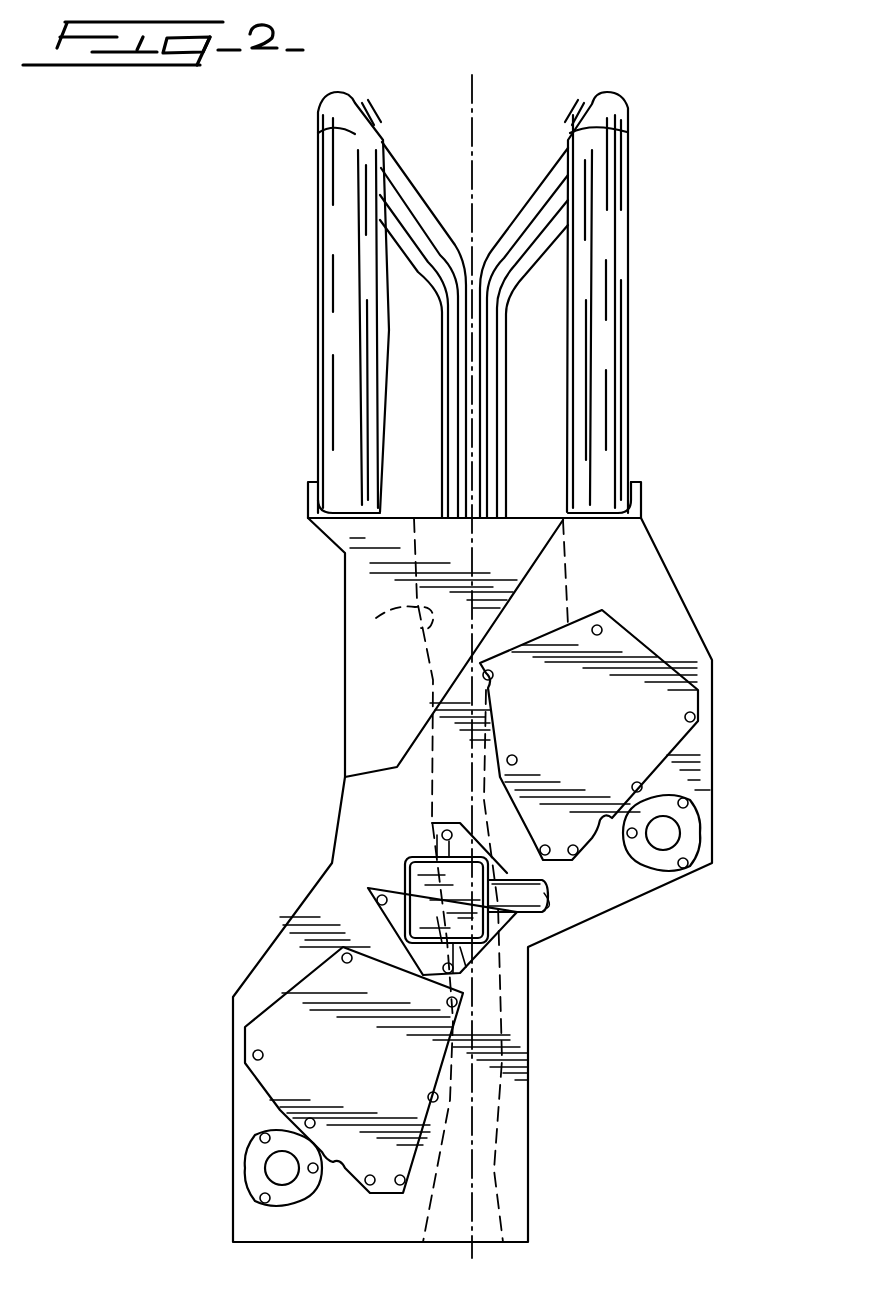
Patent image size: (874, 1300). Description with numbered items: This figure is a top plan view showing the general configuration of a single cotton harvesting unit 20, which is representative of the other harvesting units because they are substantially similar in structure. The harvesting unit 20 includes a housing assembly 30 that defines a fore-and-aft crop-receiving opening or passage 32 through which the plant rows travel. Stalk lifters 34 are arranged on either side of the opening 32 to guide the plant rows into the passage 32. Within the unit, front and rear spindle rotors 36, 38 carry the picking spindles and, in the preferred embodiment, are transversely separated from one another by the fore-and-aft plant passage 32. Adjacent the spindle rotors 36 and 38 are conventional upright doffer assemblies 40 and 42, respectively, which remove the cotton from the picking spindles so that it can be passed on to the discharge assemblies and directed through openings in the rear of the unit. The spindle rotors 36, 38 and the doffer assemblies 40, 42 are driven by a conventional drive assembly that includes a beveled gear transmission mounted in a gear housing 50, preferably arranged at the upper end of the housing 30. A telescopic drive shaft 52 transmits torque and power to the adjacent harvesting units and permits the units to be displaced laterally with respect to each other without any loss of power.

The harvesting unit 20 is at (338, 757).
The housing assembly 30 is at (372, 823).
The crop-receiving opening or passage 32 is at (394, 626).
The stalk lifters 34 is at (583, 132).
The front spindle rotor 36 is at (592, 731).
The rear spindle rotor 38 is at (362, 1070).
The doffer assembly 40 is at (688, 842).
The doffer assembly 42 is at (262, 1170).
The gear housing 50 is at (433, 893).
The telescopic drive shaft 52 is at (517, 910).